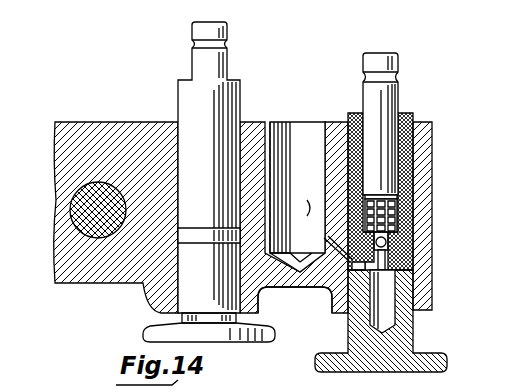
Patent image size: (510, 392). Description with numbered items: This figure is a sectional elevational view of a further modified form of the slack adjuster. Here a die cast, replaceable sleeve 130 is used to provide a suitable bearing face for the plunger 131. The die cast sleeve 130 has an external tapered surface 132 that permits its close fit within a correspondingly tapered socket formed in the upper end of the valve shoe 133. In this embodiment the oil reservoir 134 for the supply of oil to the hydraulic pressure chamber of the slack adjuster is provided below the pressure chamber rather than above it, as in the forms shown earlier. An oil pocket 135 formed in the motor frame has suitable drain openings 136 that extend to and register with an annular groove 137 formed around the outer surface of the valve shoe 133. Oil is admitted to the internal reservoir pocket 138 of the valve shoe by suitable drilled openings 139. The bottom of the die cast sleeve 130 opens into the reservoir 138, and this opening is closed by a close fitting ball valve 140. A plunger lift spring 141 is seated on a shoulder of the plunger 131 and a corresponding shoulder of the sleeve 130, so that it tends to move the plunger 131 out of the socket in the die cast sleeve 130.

The die cast replaceable sleeve 130 is at (410, 115).
The plunger 131 is at (192, 70).
The external tapered surface 132 is at (360, 113).
The valve shoe 133 is at (414, 290).
The oil reservoir 134 is at (390, 318).
The oil pocket 135 is at (288, 124).
The drain openings 136 is at (304, 214).
The annular groove 137 is at (210, 236).
The internal reservoir pocket 138 is at (396, 212).
The drilled openings 139 is at (385, 258).
The ball valve 140 is at (386, 240).
The plunger lift spring 141 is at (396, 200).